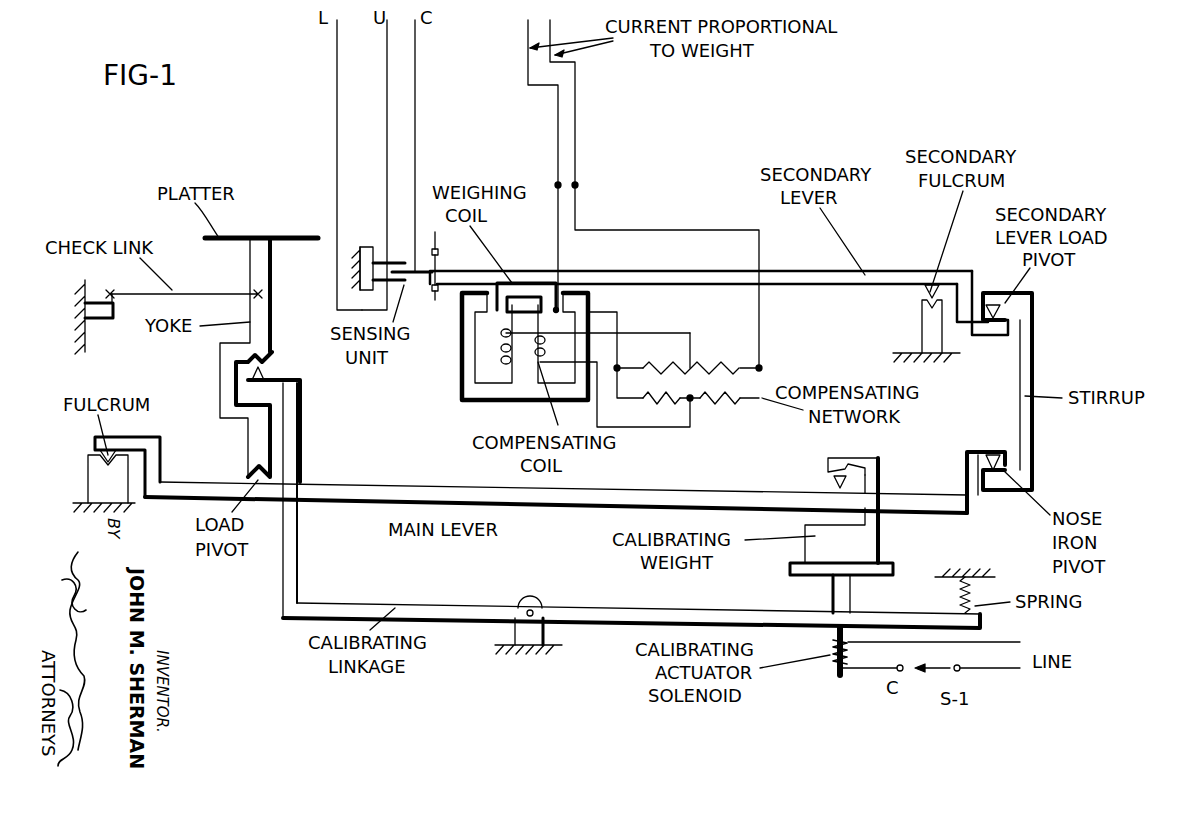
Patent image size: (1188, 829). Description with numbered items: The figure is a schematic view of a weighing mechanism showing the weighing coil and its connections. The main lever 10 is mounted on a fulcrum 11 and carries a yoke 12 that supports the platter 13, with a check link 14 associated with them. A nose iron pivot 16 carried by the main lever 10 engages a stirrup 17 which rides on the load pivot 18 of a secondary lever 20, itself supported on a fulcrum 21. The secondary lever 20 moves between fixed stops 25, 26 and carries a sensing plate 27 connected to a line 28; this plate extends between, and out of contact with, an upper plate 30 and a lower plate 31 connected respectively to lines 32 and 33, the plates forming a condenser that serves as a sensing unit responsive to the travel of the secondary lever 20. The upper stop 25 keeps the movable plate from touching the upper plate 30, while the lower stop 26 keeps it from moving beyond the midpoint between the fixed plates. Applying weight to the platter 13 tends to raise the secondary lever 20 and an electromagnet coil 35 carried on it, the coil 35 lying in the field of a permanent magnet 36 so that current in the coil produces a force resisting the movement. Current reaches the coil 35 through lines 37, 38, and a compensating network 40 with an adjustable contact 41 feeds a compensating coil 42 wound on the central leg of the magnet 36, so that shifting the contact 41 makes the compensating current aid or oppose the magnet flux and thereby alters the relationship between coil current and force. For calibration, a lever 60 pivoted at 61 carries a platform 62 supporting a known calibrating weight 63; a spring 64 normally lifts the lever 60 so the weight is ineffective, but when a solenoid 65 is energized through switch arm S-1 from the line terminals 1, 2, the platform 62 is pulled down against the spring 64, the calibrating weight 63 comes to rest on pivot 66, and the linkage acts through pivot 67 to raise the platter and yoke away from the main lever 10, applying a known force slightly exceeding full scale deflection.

The main lever 10 is at (410, 490).
The fulcrum 11 is at (95, 478).
The yoke 12 is at (222, 386).
The platter 13 is at (278, 238).
The check link 14 is at (193, 294).
The nose iron pivot 16 is at (990, 462).
The stirrup 17 is at (1035, 343).
The load pivot 18 is at (1030, 312).
The secondary lever 20 is at (796, 278).
The fulcrum 21 is at (920, 326).
The upper stop 25 is at (435, 250).
The lower stop 26 is at (437, 295).
The sensing plate 27 is at (405, 278).
The line 28 is at (415, 100).
The upper plate 30 is at (383, 262).
The lower plate 31 is at (380, 284).
The line 32 is at (387, 114).
The line 33 is at (337, 97).
The electromagnet coil 35 is at (512, 283).
The permanent magnet 36 is at (466, 374).
The line 37 is at (558, 130).
The line 38 is at (575, 132).
The compensating network 40 is at (718, 360).
The adjustable contact 41 is at (688, 356).
The compensating coil 42 is at (505, 362).
The lever 60 is at (283, 600).
The pivot 61 is at (545, 633).
The platform 62 is at (790, 568).
The calibrating weight 63 is at (880, 537).
The spring 64 is at (960, 600).
The solenoid 65 is at (836, 664).
The pivot 66 is at (834, 482).
The pivot 67 is at (270, 368).
The line terminal 1 is at (940, 640).
The line terminal 2 is at (936, 679).